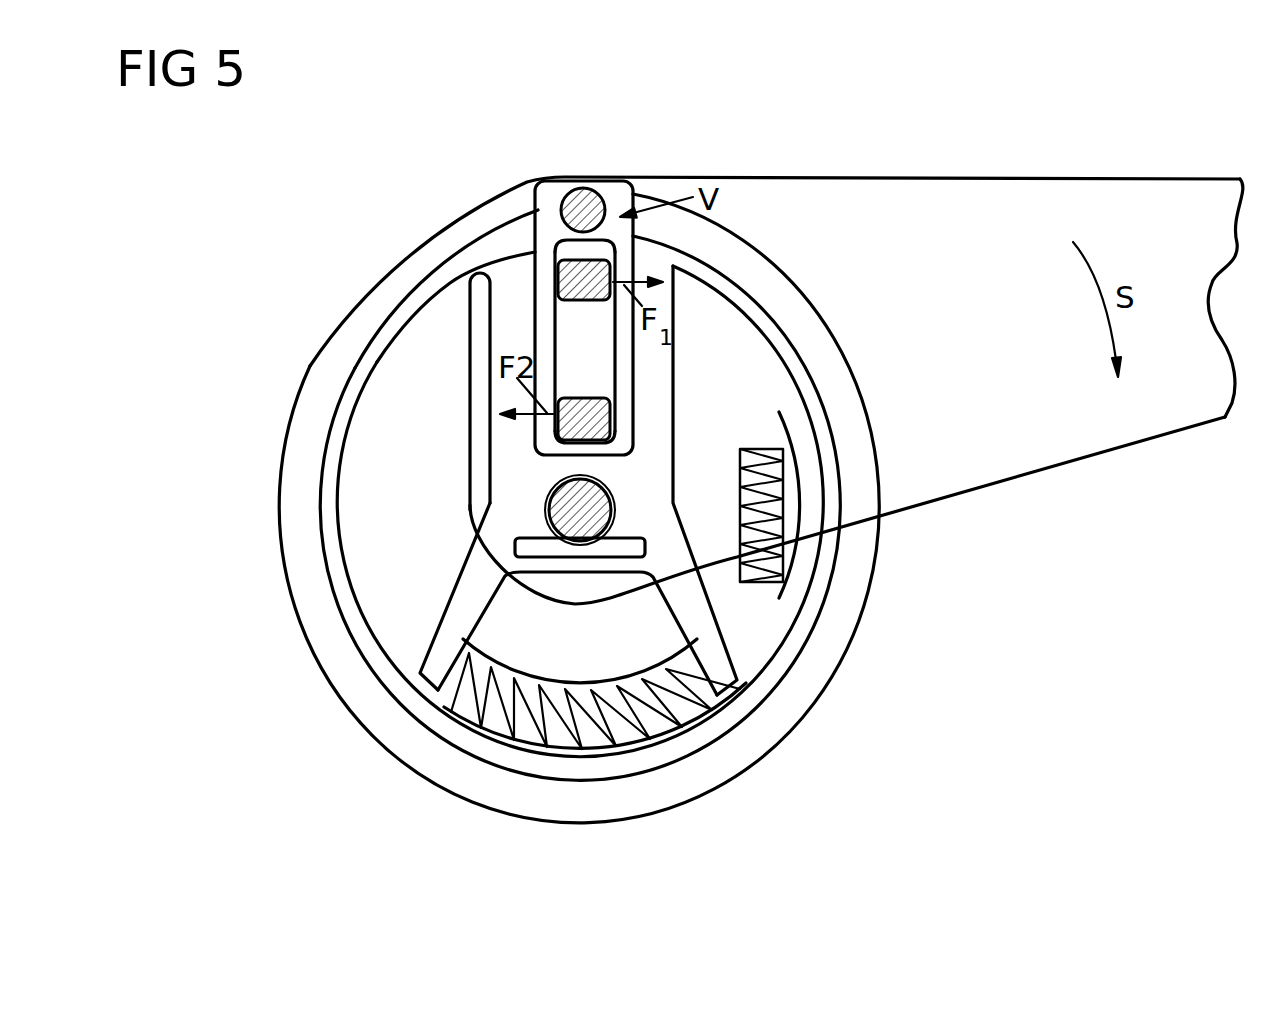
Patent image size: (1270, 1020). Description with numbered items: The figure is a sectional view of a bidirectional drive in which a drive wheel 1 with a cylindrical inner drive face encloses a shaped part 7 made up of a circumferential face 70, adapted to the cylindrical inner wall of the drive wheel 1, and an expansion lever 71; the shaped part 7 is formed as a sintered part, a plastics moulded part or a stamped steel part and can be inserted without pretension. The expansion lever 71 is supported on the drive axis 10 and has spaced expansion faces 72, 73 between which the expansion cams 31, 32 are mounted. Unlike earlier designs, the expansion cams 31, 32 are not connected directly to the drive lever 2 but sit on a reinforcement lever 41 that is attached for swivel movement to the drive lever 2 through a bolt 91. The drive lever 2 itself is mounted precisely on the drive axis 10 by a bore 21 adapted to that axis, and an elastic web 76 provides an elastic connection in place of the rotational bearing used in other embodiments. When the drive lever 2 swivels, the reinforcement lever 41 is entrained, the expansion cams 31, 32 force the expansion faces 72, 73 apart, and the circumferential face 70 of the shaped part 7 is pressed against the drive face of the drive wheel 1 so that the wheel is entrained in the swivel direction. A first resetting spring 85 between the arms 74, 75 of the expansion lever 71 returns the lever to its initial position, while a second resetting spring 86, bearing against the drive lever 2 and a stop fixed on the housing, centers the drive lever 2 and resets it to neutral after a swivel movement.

The drive wheel 1 is at (733, 743).
The drive lever 2 is at (1072, 437).
The shaped part 7 is at (358, 390).
The drive axis 10 is at (565, 545).
The bore 21 is at (550, 492).
The expansion cam 31 is at (550, 245).
The expansion cam 32 is at (614, 430).
The reinforcement lever 41 is at (549, 205).
The circumferential face 70 is at (345, 340).
The expansion lever 71 is at (490, 382).
The expansion face 72 is at (553, 330).
The expansion face 73 is at (615, 348).
The arm 74 is at (450, 652).
The arm 75 is at (705, 645).
The elastic web 76 is at (592, 566).
The first resetting spring 85 is at (598, 720).
The second resetting spring 86 is at (778, 455).
The bolt 91 is at (600, 197).